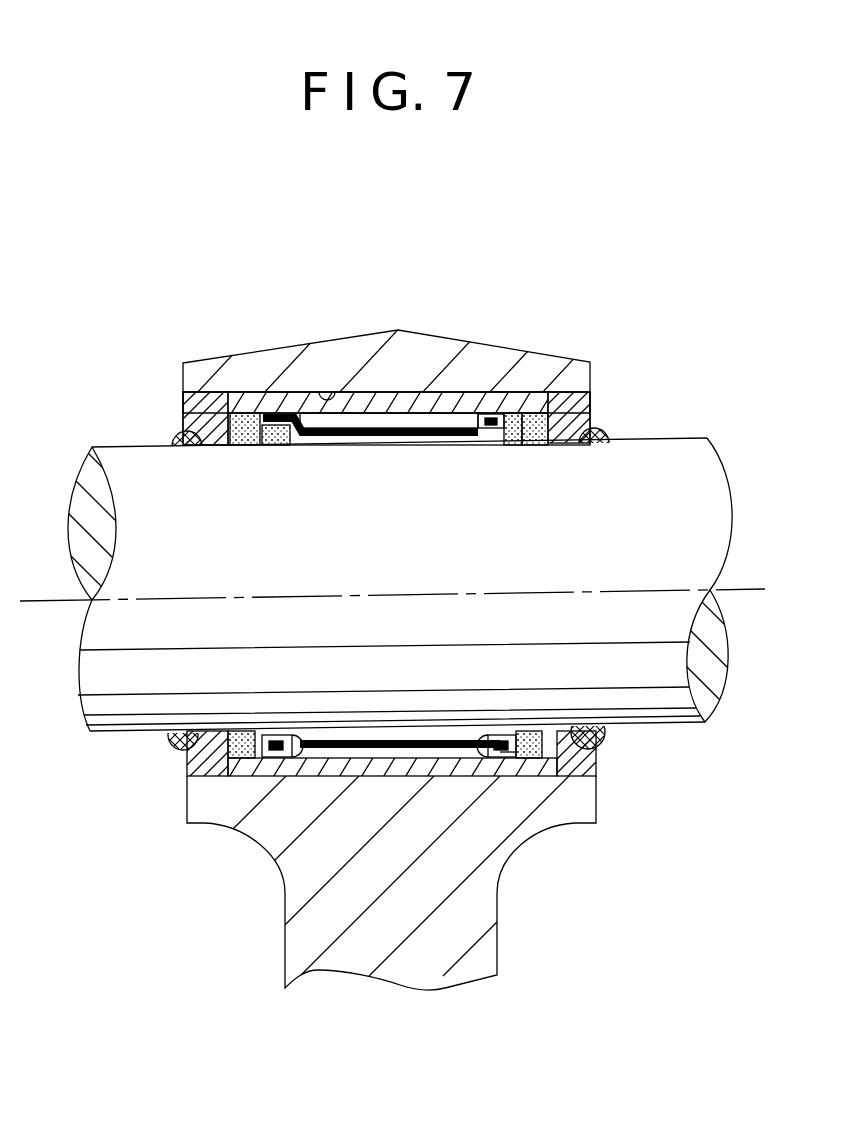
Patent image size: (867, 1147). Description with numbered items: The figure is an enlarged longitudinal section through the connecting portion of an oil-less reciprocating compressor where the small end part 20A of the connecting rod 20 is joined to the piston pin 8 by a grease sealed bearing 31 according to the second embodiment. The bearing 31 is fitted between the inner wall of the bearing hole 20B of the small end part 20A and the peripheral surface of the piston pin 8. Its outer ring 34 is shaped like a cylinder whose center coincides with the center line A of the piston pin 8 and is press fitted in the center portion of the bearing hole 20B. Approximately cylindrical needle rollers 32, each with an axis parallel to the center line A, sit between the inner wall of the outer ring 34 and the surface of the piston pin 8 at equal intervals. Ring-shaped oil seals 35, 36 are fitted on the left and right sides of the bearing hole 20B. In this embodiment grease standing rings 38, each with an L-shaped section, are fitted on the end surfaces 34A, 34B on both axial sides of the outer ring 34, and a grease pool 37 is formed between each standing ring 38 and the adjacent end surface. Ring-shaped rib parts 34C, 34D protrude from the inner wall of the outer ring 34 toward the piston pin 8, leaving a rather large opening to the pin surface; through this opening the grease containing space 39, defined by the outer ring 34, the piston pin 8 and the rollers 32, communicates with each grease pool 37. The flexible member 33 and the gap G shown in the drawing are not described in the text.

The piston pin 8 is at (700, 523).
The center line A is at (728, 582).
The connecting rod 20 is at (482, 952).
The small end part 20A is at (418, 360).
The bearing hole 20B is at (330, 392).
The grease sealed bearing 31 is at (163, 394).
The needle roller 32 is at (468, 420).
The flexible plate 33 is at (373, 427).
The outer ring 34 is at (260, 404).
The end surface 34A is at (562, 410).
The end surface 34B is at (190, 412).
The rib part 34C is at (553, 773).
The rib part 34D is at (235, 776).
The oil seal 35 is at (603, 740).
The oil seal 36 is at (172, 757).
The grease pool 37 is at (174, 432).
The grease standing ring 38 is at (240, 393).
The grease containing space 39 is at (515, 415).
The gap G is at (520, 748).